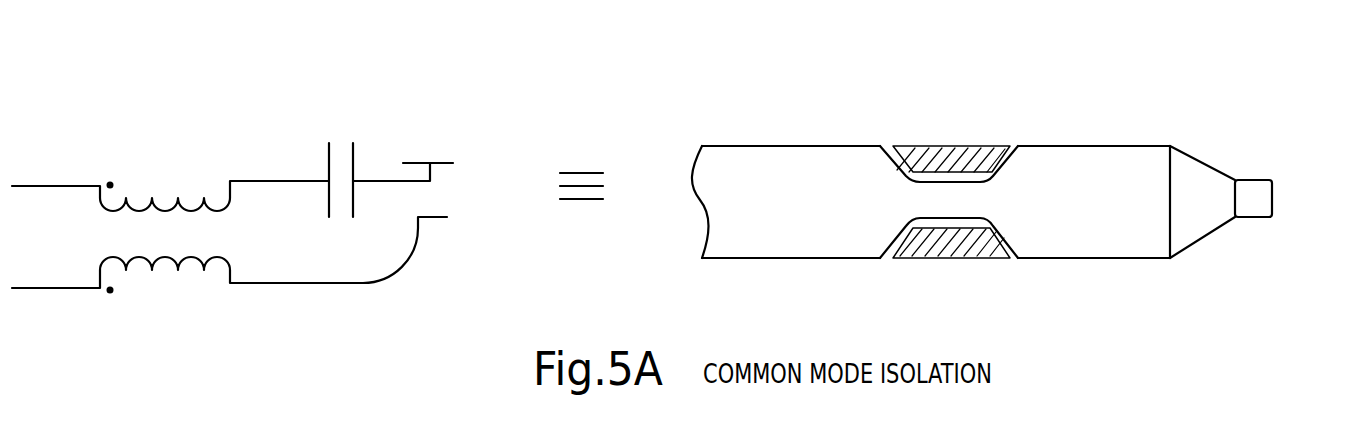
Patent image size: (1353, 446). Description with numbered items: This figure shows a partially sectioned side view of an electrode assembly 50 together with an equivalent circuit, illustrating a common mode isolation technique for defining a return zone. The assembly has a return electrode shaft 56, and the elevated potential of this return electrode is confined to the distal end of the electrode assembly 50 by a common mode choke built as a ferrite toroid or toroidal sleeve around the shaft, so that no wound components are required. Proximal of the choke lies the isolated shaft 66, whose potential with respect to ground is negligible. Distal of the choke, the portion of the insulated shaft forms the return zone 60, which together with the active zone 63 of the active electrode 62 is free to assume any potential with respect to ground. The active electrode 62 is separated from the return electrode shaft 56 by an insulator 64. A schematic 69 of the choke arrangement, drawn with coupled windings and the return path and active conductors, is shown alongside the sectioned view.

The electrode assembly 50 is at (1091, 106).
The return electrode shaft 56 is at (1065, 237).
The return zone 60 is at (1127, 163).
The active electrode 62 is at (1257, 190).
The active zone 63 is at (1273, 212).
The insulator 64 is at (1200, 217).
The isolated shaft 66 is at (790, 160).
The schematic of the choke arrangement 69 is at (397, 327).